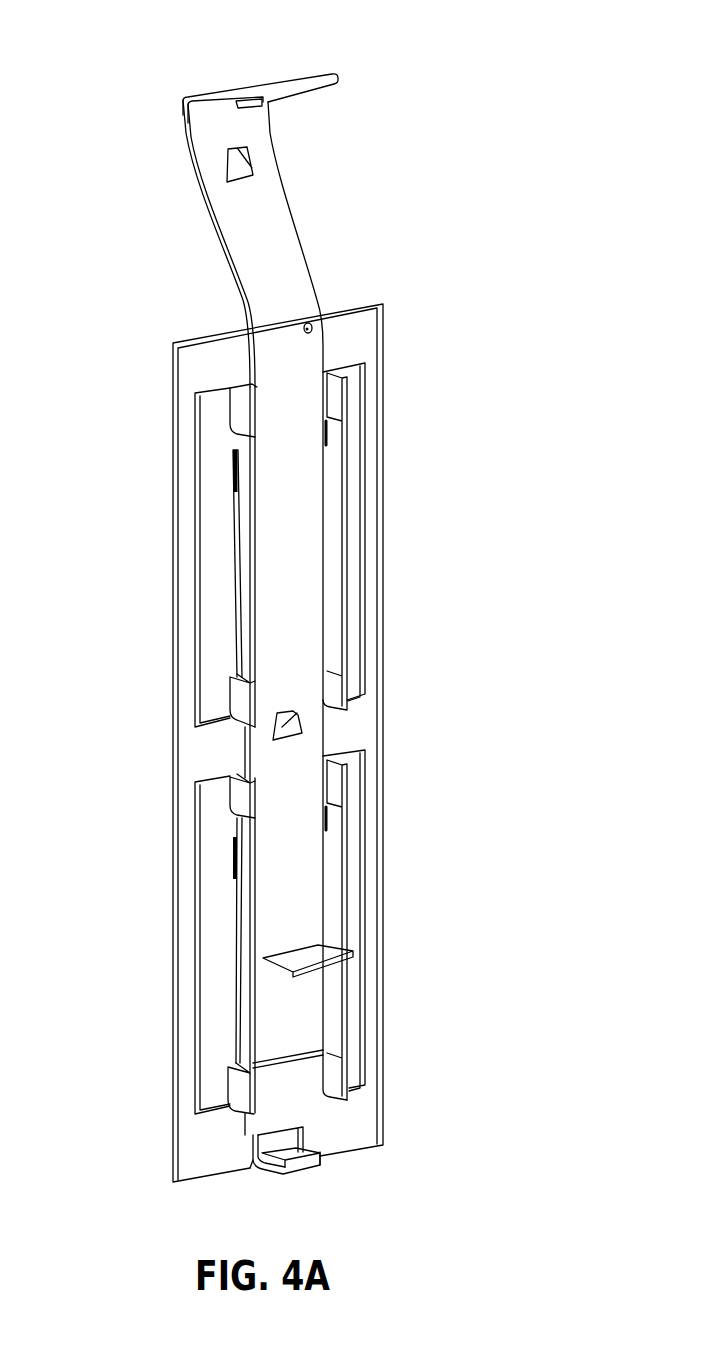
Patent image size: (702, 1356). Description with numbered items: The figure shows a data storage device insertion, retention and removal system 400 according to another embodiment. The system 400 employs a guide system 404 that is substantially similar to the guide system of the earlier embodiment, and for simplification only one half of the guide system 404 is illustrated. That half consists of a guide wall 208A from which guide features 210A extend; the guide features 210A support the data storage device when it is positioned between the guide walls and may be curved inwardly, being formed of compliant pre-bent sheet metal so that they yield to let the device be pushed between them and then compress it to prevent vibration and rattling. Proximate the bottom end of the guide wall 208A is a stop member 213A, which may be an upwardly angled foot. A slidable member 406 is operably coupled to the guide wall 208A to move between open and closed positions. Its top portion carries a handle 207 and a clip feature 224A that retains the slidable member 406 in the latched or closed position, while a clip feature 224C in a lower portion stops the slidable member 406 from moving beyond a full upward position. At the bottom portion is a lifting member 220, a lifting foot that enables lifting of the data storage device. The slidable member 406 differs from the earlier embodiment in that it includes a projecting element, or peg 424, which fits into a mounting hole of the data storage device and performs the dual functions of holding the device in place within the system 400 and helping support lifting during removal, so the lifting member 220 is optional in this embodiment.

The data storage device insertion, retention and removal system 400 is at (493, 105).
The guide system 404 is at (399, 662).
The guide wall 208A is at (183, 356).
The slidable member 406 is at (176, 277).
The handle 207 is at (258, 83).
The clip feature 224A is at (237, 177).
The projecting element (peg) 424 is at (307, 321).
The guide feature 210A is at (247, 538).
The clip feature 224C is at (300, 715).
The lifting member 220 is at (304, 958).
The stop member 213A is at (288, 1153).